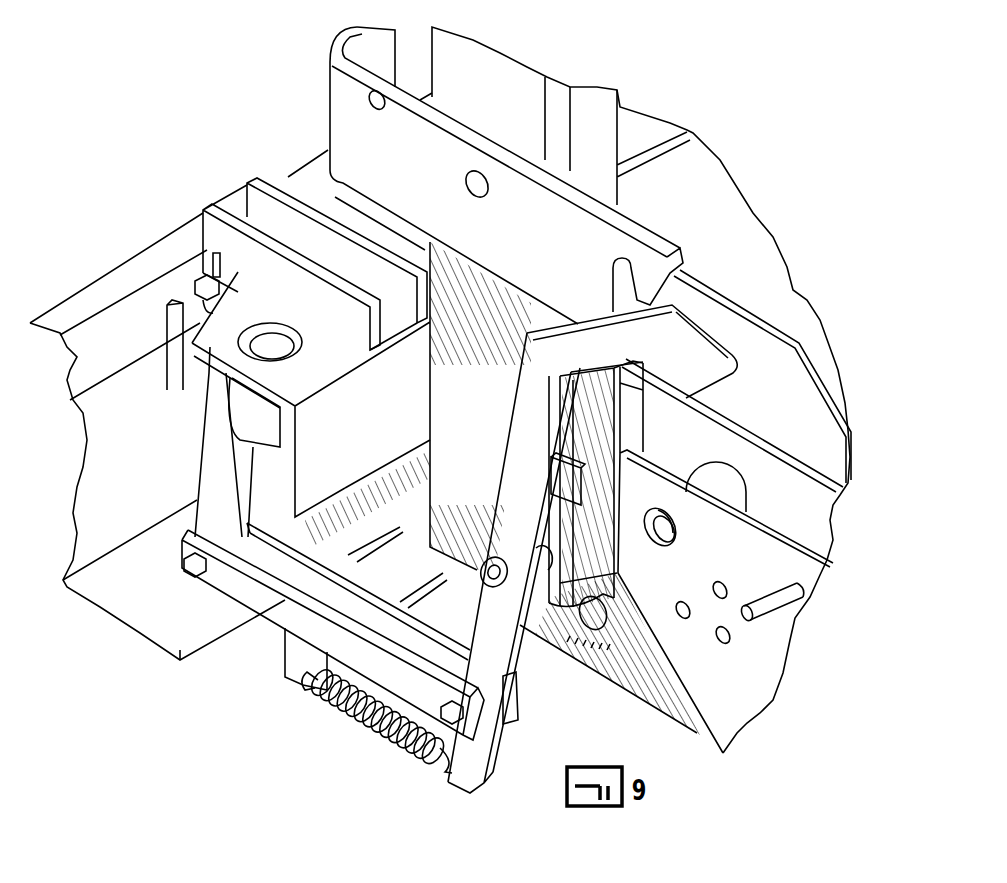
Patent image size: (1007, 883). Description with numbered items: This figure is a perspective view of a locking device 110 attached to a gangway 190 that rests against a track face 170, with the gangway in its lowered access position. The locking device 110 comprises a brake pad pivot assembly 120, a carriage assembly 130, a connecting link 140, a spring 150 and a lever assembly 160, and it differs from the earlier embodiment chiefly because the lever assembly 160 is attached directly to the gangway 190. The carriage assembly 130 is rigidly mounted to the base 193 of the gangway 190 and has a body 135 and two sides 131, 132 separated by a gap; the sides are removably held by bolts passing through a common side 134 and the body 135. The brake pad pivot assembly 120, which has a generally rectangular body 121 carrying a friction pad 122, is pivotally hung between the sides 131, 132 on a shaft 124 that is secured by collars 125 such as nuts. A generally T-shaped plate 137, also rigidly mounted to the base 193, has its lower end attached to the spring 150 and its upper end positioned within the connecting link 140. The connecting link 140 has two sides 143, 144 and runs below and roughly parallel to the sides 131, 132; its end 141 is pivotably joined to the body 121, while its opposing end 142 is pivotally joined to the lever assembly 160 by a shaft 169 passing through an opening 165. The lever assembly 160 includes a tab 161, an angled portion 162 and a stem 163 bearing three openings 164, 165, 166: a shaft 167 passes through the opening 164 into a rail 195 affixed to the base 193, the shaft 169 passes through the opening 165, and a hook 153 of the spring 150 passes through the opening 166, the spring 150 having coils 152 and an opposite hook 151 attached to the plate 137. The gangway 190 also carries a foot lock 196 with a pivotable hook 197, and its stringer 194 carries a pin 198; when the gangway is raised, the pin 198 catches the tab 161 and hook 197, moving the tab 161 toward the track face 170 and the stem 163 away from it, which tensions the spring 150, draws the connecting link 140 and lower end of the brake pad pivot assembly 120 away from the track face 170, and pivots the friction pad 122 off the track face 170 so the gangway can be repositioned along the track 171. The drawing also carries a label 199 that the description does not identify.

The locking device 110 is at (230, 685).
The brake pad pivot assembly 120 is at (191, 368).
The body 121 is at (220, 480).
The friction pad 122 is at (166, 340).
The shaft 124 is at (217, 263).
The collars 125 is at (200, 283).
The carriage assembly 130 is at (361, 357).
The side 131 is at (213, 227).
The side 132 is at (283, 197).
The common side 134 is at (397, 332).
The body 135 is at (217, 350).
The plate 137 is at (393, 573).
The connecting link 140 is at (362, 642).
The end 141 is at (210, 577).
The opposing end 142 is at (417, 678).
The side 143 is at (292, 652).
The side 144 is at (290, 557).
The spring 150 is at (364, 736).
The hook 151 is at (302, 687).
The spring coils 152 is at (365, 737).
The hook 153 is at (440, 762).
The lever assembly 160 is at (608, 555).
The tab 161 is at (700, 378).
The angled portion 162 is at (593, 343).
The stem 163 is at (529, 400).
The opening 164 is at (492, 560).
The opening 165 is at (475, 718).
The opening 166 is at (468, 793).
The shaft 167 is at (481, 576).
The shaft 169 is at (482, 760).
The track face 170 is at (157, 445).
The track 171 is at (157, 617).
The gangway 190 is at (803, 430).
The base 193 is at (630, 673).
The stringer 194 is at (730, 697).
The rail 195 is at (594, 562).
The foot lock 196 is at (585, 215).
The hook 197 is at (645, 285).
The pin 198 is at (762, 612).
The channel 199 is at (345, 31).